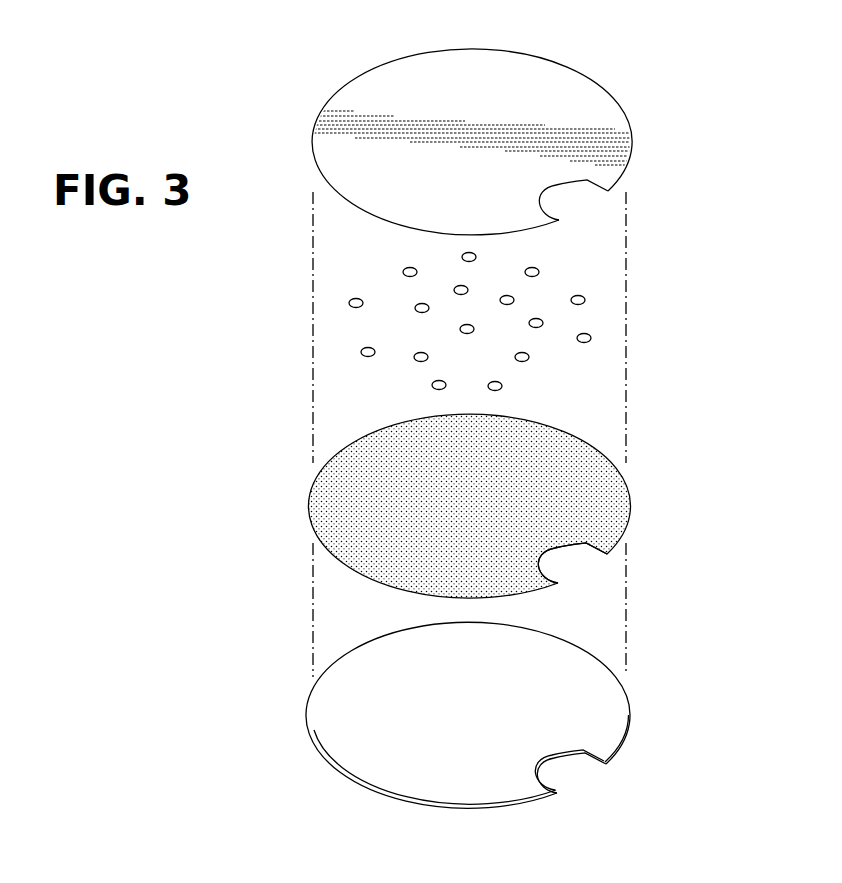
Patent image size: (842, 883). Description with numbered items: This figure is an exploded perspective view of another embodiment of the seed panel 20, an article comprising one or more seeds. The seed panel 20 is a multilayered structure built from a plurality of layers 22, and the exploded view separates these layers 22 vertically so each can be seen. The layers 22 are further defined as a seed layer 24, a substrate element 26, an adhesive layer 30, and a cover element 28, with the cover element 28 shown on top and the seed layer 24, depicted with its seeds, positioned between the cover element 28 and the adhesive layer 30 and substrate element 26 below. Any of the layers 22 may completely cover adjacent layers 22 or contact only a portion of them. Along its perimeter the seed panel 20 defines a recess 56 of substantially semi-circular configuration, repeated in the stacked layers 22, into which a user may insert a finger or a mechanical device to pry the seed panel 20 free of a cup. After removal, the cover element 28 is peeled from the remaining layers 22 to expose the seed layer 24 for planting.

The seed panel 20 is at (343, 55).
The layers 22 is at (645, 87).
The seed layer 24 is at (422, 308).
The substrate element 26 is at (333, 727).
The cover element 28 is at (531, 82).
The adhesive layer 30 is at (334, 514).
The recess 56 is at (585, 184).